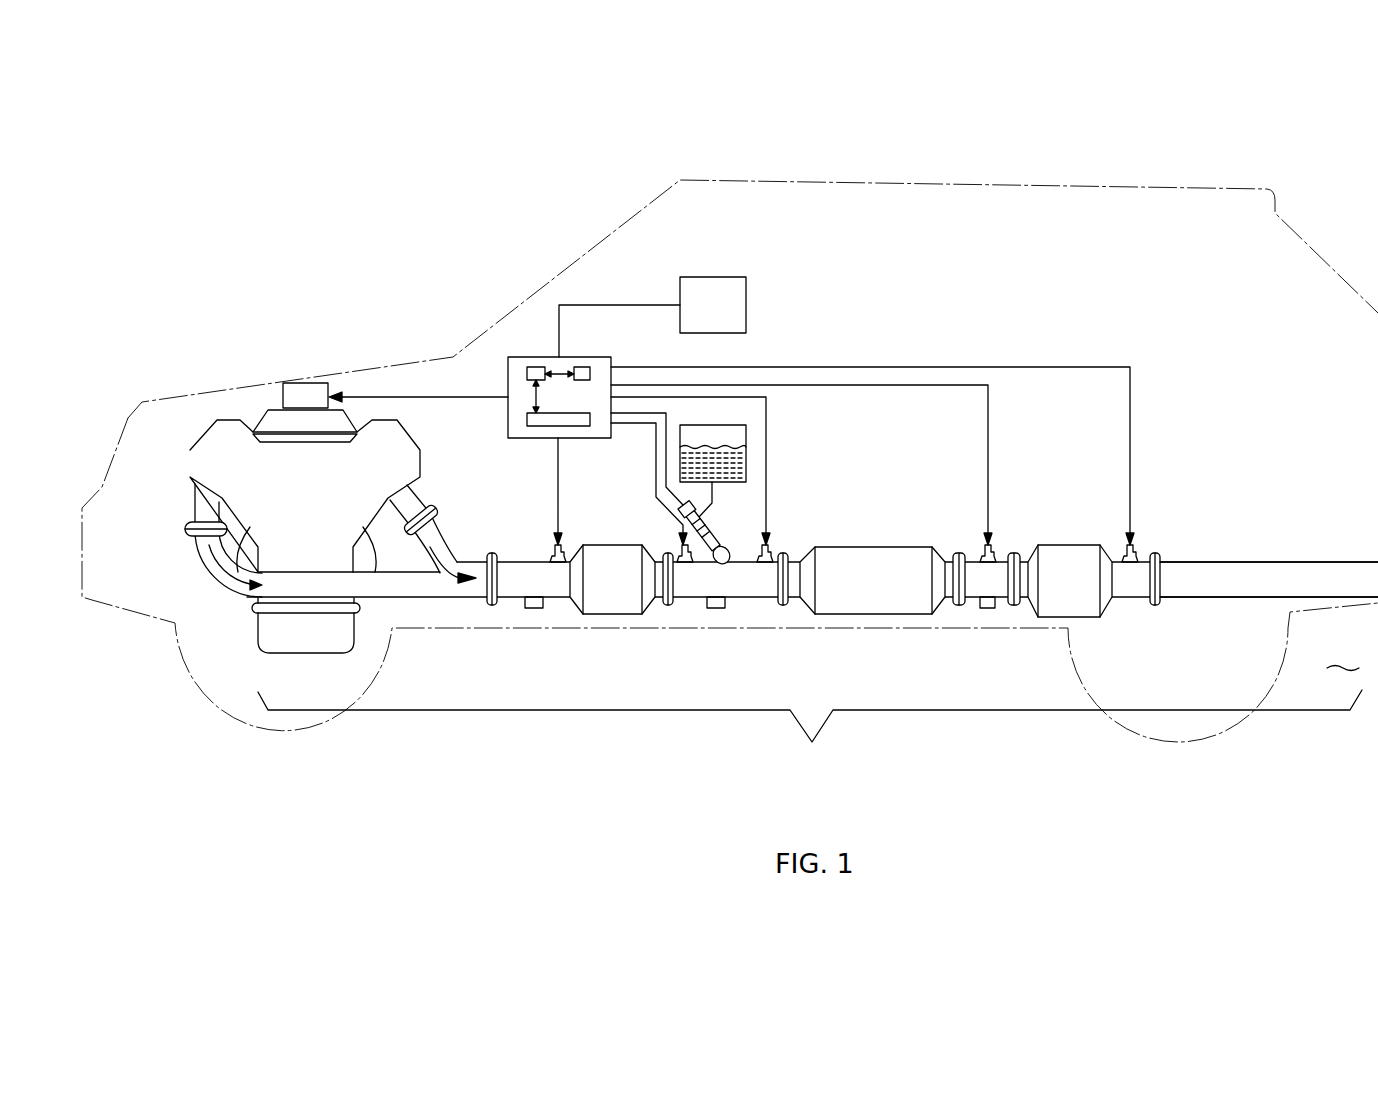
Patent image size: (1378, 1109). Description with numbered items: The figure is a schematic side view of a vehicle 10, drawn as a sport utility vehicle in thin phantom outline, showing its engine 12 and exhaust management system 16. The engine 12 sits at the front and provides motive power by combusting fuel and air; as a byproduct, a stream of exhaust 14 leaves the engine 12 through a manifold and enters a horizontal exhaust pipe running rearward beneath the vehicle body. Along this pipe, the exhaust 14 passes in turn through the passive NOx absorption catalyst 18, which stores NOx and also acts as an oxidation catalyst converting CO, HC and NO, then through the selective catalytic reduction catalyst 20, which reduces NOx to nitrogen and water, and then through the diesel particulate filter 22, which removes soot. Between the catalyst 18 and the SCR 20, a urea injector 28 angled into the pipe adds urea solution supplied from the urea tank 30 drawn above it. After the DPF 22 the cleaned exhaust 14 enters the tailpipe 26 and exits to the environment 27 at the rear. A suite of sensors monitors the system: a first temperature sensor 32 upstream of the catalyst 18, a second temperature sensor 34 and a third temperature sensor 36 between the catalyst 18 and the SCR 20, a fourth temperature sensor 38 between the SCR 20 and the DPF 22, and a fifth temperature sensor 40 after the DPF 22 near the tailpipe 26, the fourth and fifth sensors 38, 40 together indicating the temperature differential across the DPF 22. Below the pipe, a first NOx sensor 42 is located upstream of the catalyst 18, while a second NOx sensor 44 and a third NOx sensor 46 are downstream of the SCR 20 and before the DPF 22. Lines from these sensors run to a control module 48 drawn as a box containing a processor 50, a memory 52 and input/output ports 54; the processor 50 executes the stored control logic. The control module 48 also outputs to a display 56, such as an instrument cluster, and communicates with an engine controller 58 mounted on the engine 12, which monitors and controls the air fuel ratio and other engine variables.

The vehicle 10 is at (493, 172).
The engine 12 is at (205, 436).
The stream of exhaust 14 is at (436, 552).
The exhaust management system 16 is at (810, 737).
The passive NOx absorption catalyst 18 is at (612, 614).
The selective catalytic reduction catalyst 20 is at (870, 614).
The diesel particulate filter 22 is at (1090, 617).
The tailpipe 26 is at (1222, 562).
The environment 27 is at (1345, 653).
The urea injector 28 is at (722, 550).
The urea tank 30 is at (746, 443).
The first temperature sensor 32 is at (553, 557).
The second temperature sensor 34 is at (679, 557).
The third temperature sensor 36 is at (772, 556).
The fourth temperature sensor 38 is at (995, 556).
The fifth temperature sensor 40 is at (1137, 556).
The first NOx sensor 42 is at (533, 608).
The second NOx sensor 44 is at (715, 608).
The third NOx sensor 46 is at (987, 608).
The control module 48 is at (493, 397).
The processor 50 is at (532, 367).
The memory 52 is at (582, 367).
The input/output ports 54 is at (533, 426).
The display 56 is at (746, 305).
The engine controller 58 is at (303, 383).